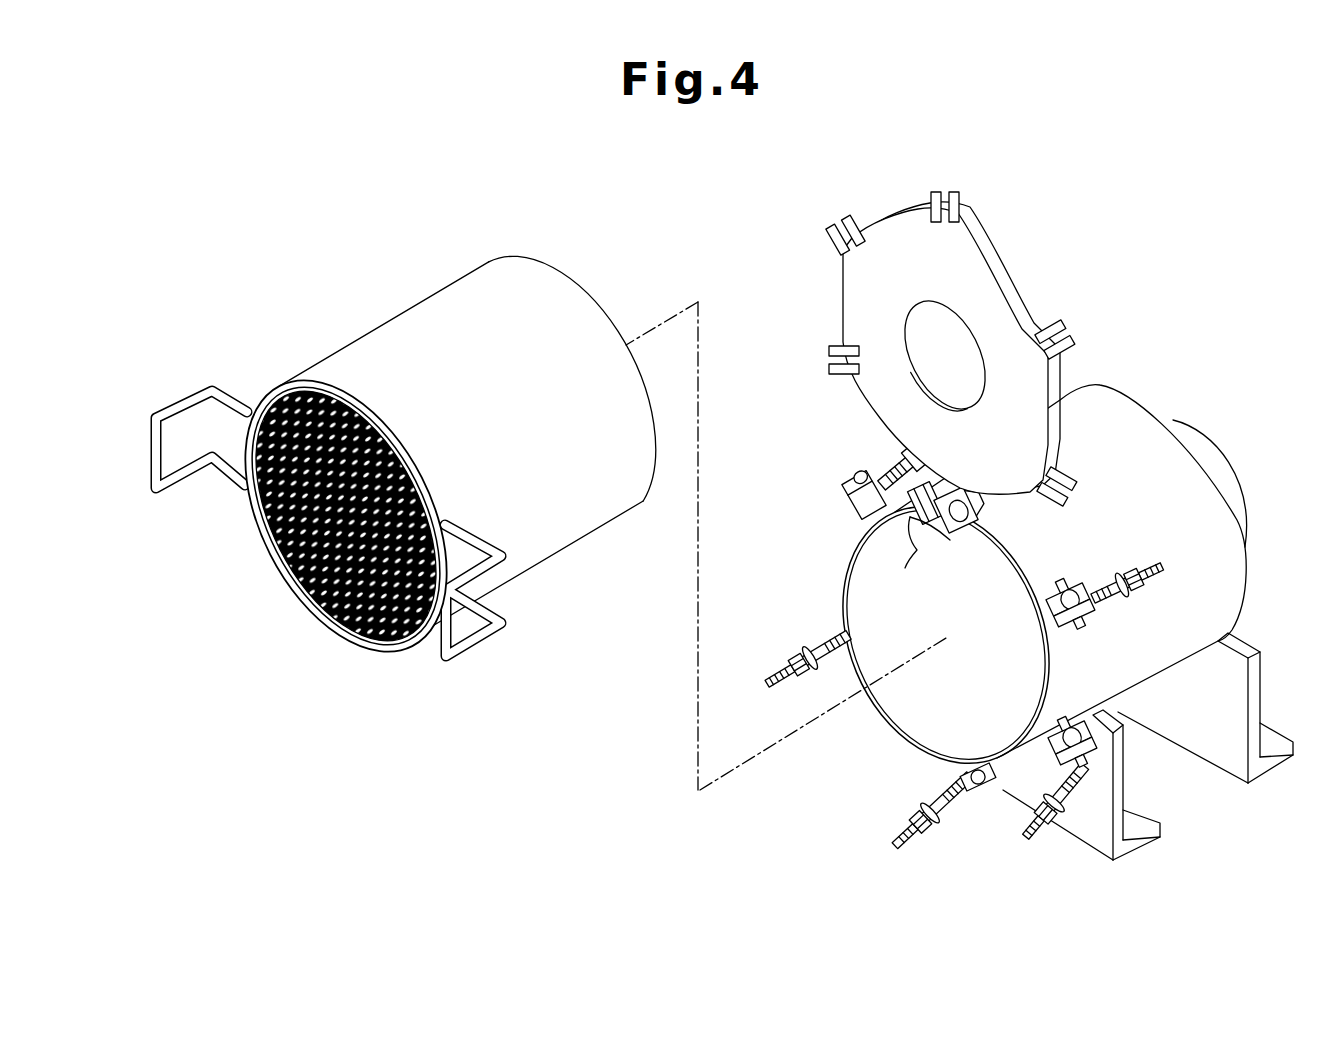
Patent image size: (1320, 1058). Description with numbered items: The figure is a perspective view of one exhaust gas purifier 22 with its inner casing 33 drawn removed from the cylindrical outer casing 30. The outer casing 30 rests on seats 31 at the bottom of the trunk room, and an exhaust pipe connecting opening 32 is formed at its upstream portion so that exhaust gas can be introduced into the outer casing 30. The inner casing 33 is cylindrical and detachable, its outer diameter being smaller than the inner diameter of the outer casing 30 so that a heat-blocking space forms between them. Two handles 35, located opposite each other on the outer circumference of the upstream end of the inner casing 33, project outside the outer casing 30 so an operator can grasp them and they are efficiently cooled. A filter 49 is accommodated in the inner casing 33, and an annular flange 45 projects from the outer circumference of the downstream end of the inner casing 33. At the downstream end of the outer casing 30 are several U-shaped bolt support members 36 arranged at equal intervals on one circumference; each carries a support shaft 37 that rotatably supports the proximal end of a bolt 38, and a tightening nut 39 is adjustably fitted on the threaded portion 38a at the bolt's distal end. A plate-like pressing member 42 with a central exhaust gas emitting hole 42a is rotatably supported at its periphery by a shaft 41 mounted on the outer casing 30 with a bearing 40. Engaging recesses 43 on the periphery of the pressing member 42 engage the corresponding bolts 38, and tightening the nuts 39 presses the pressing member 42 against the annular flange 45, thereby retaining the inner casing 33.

The exhaust gas purifier 22 is at (375, 265).
The outer casing 30 is at (1247, 580).
The seats 31 is at (1265, 772).
The exhaust pipe connecting opening 32 is at (1252, 500).
The inner casing 33 is at (541, 560).
The handles 35 is at (183, 400).
The bolt support members 36 is at (848, 512).
The support shaft 37 is at (866, 478).
The bolt 38 is at (764, 689).
The threaded portion 38a is at (795, 680).
The tightening nut 39 is at (798, 662).
The bearing 40 is at (983, 515).
The shaft 41 is at (912, 548).
The pressing member 42 is at (995, 290).
The exhaust gas emitting hole 42a is at (978, 375).
The engaging recesses 43 is at (830, 231).
The annular flange 45 is at (428, 470).
The filter 49 is at (290, 566).